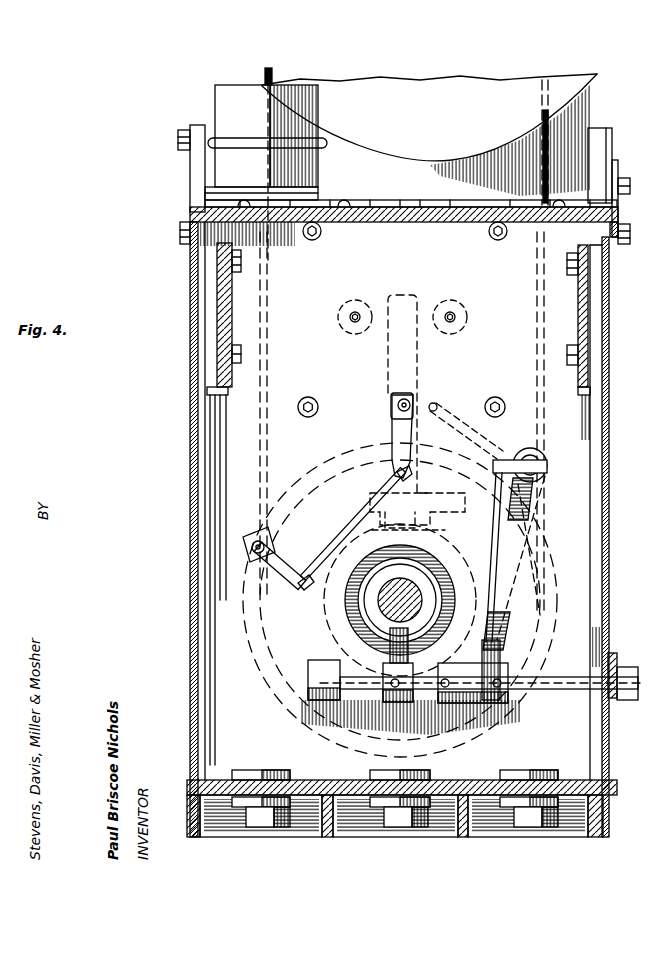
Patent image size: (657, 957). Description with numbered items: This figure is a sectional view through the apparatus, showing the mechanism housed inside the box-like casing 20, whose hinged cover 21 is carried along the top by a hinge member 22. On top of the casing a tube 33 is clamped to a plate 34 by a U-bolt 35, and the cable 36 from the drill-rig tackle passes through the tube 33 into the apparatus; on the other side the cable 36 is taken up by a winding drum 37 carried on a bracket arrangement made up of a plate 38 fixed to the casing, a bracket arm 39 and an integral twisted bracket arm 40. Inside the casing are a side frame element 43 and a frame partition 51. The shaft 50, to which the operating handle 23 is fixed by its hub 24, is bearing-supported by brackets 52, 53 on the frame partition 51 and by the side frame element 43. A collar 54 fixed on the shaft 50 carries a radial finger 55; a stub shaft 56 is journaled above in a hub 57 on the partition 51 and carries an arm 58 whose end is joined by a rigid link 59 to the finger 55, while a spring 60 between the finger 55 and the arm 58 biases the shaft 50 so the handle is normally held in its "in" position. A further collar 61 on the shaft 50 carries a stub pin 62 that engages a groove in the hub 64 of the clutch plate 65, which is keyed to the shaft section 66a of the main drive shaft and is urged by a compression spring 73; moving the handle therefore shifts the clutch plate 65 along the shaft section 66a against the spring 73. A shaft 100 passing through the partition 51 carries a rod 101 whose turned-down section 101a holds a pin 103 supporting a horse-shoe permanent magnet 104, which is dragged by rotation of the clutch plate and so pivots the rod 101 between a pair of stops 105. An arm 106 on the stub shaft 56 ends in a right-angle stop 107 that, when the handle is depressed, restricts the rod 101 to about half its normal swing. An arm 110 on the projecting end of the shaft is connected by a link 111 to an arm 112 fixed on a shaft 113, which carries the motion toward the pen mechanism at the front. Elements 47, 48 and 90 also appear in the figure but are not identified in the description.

The casing 20 is at (190, 425).
The cover 21 is at (418, 225).
The hinge member 22 is at (415, 200).
The operating handle 23 is at (616, 655).
The hub 24 is at (632, 668).
The tube 33 is at (215, 96).
The plate 34 is at (190, 160).
The U-bolt 35 is at (232, 138).
The cable 36 is at (265, 78).
The winding drum 37 is at (597, 78).
The plate 38 is at (620, 172).
The bracket arm 39 is at (608, 148).
The twisted bracket arm 40 is at (594, 150).
The side frame element 43 is at (590, 613).
The left support bar 47 is at (232, 300).
The right support bar 48 is at (578, 310).
The shaft 50 is at (565, 690).
The frame partition 51 is at (598, 510).
The bracket 52 is at (445, 705).
The bracket 53 is at (322, 660).
The collar 54 is at (505, 705).
The radial finger 55 is at (495, 660).
The stub shaft 56 is at (545, 460).
The hub 57 is at (550, 470).
The arm 58 is at (500, 460).
The rigid link 59 is at (492, 540).
The spring 60 is at (535, 500).
The collar 61 is at (394, 703).
The stub pin 62 is at (392, 646).
The hub 64 is at (400, 545).
The clutch plate 65 is at (463, 560).
The shaft section 66a is at (426, 586).
The compression spring 73 is at (424, 599).
The dial plate 90 is at (322, 463).
The shaft 100 is at (398, 405).
The rod 101 is at (387, 355).
The turned-down section 101a is at (420, 528).
The pin 103 is at (420, 516).
The permanent magnet 104 is at (465, 495).
The stops 105 is at (356, 312).
The arm 106 is at (462, 424).
The stop 107 is at (437, 403).
The arm 110 is at (392, 428).
The link 111 is at (345, 526).
The arm 112 is at (291, 566).
The shaft 113 is at (250, 555).